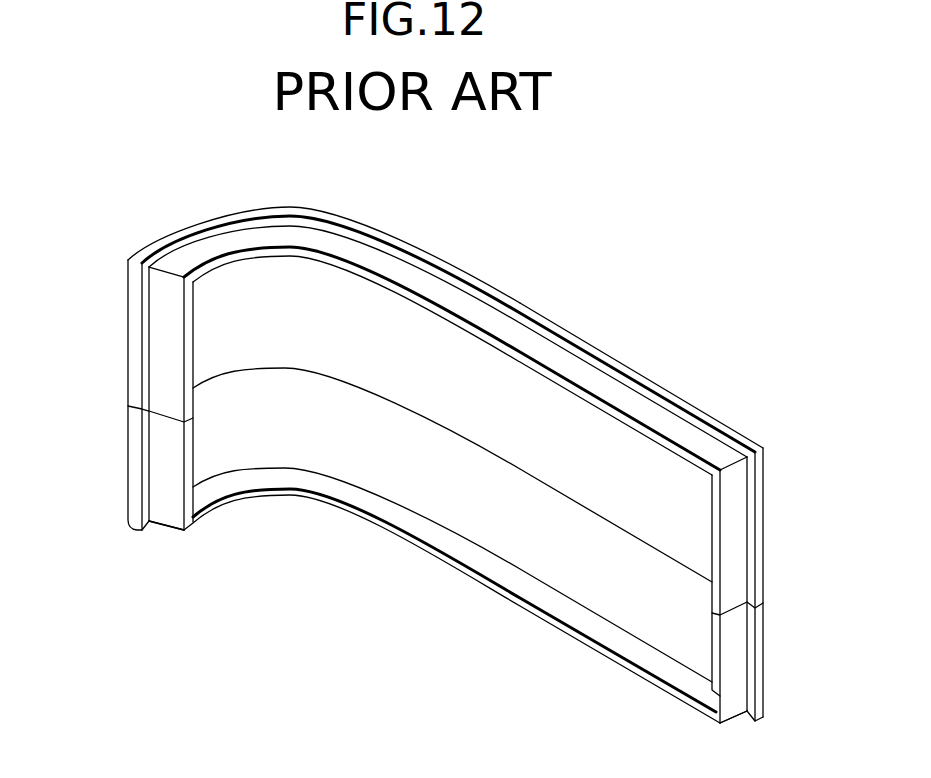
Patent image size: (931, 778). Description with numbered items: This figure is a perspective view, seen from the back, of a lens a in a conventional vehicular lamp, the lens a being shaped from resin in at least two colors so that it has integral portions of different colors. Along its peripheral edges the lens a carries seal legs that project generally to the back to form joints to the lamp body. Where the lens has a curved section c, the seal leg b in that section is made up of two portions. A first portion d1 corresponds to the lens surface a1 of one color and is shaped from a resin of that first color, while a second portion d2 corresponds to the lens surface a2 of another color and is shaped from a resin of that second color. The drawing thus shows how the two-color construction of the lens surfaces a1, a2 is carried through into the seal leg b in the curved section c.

The lens a is at (581, 298).
The lens surface a1 is at (611, 476).
The lens surface a2 is at (611, 584).
The seal leg b is at (340, 257).
The curved section c is at (250, 173).
The first portion d1 is at (158, 374).
The second portion d2 is at (158, 464).